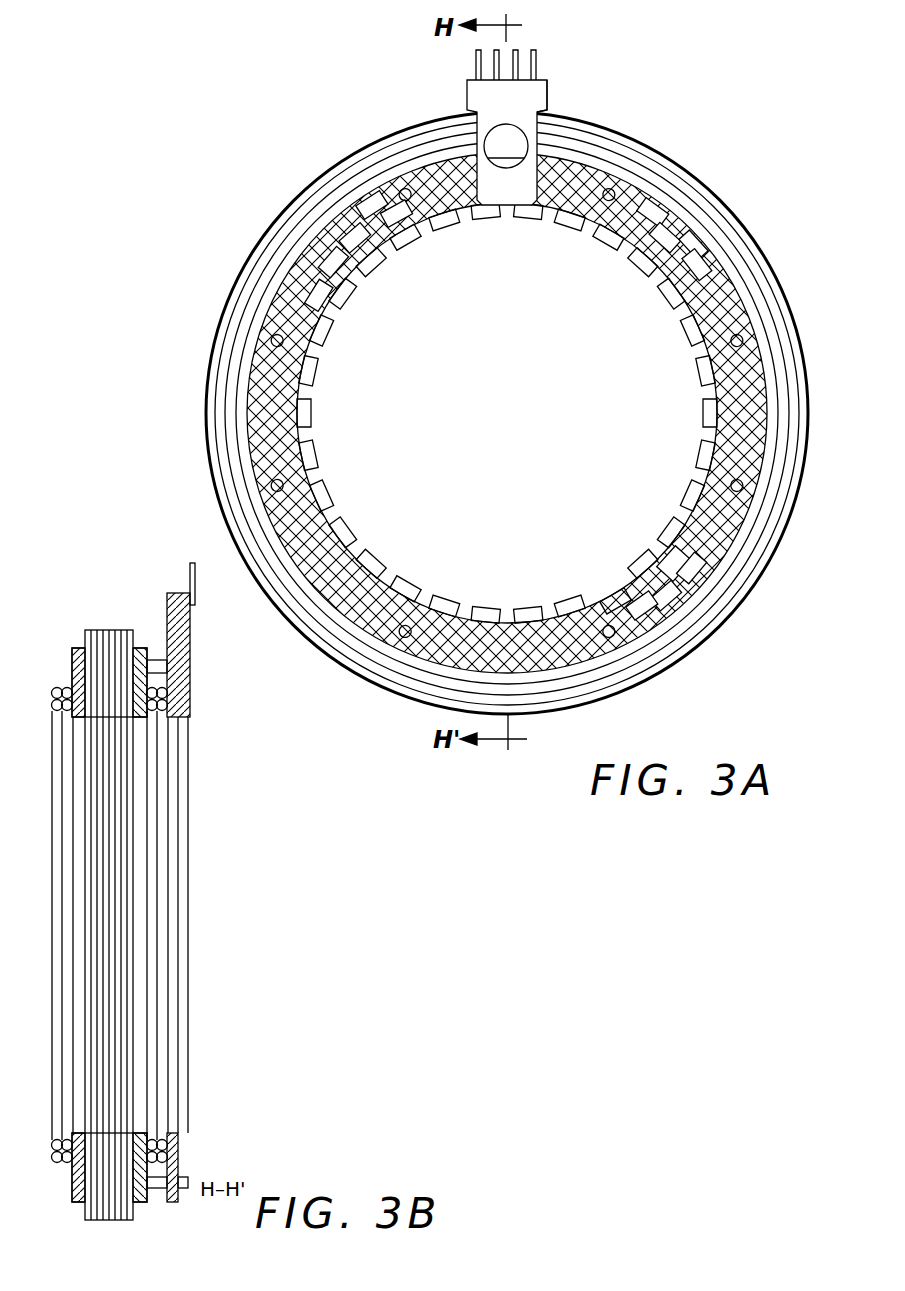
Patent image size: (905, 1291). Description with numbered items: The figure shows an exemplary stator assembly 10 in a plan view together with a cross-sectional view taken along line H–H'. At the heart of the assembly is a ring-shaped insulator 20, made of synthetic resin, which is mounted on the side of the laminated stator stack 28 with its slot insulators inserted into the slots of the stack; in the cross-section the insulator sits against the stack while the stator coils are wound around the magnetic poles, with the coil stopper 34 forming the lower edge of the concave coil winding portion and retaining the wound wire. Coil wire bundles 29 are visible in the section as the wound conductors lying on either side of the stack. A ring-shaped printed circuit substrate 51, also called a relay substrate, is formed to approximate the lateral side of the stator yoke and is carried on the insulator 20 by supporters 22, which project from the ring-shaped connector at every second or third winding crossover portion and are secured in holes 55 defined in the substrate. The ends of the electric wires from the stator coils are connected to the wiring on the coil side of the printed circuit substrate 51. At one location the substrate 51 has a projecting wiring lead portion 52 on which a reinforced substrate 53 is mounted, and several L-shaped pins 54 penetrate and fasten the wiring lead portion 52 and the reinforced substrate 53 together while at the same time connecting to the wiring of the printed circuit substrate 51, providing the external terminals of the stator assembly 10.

In FIG. 3A, the stator assembly 10 is at (650, 148).
In FIG. 3A, the insulator 20 is at (668, 205).
In FIG. 3A, the supporters 22 is at (408, 187).
In FIG. 3B, the supporters 22 is at (148, 658).
In FIG. 3A, the stator stack 28 is at (722, 200).
In FIG. 3B, the stator stack 28 is at (92, 1211).
In FIG. 3B, the windings 29 is at (152, 1135).
In FIG. 3A, the coil stopper 34 is at (648, 268).
In FIG. 3A, the printed circuit substrate 51 is at (700, 278).
In FIG. 3B, the printed circuit substrate 51 is at (156, 660).
In FIG. 3A, the wiring lead portion 52 is at (545, 108).
In FIG. 3A, the reinforced substrate 53 is at (488, 108).
In FIG. 3B, the reinforced substrate 53 is at (188, 688).
In FIG. 3A, the L-shaped pins 54 is at (477, 62).
In FIG. 3B, the L-shaped pins 54 is at (191, 565).
In FIG. 3A, the holes 55 is at (400, 196).